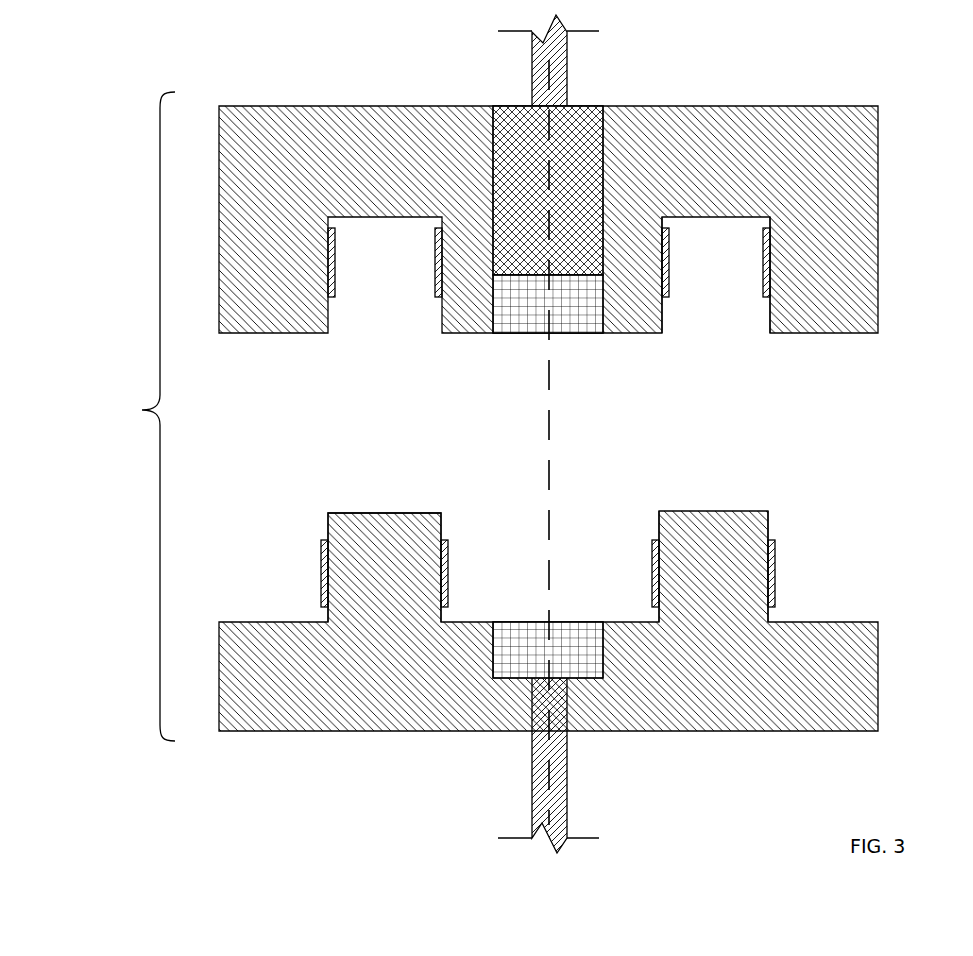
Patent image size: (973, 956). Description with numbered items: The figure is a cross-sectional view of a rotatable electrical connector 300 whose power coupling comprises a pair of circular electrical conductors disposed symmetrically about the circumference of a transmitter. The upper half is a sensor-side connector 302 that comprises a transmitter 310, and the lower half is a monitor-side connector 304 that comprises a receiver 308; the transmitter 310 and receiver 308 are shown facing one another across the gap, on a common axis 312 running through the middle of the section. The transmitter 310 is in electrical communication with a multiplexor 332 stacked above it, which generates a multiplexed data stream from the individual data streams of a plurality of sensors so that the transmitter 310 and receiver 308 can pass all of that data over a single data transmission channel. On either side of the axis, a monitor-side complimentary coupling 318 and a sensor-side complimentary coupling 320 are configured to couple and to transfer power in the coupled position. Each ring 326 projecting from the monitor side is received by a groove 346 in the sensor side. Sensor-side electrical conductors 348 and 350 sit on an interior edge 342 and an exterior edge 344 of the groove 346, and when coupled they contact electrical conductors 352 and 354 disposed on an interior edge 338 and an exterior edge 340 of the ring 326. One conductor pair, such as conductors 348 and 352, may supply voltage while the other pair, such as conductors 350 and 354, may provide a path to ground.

The rotatable electrical connector 300 is at (130, 416).
The sensor-side connector 302 is at (548, 233).
The monitor-side connector 304 is at (548, 608).
The receiver 308 is at (540, 621).
The transmitter 310 is at (525, 334).
The rotation axis 312 is at (549, 450).
The monitor-side complimentary coupling 318 is at (345, 529).
The sensor-side complimentary coupling 320 is at (294, 356).
The ring 326 is at (381, 513).
The multiplexor 332 is at (507, 106).
The interior edge of ring 338 is at (659, 525).
The exterior edge of ring 340 is at (713, 539).
The interior edge of groove 342 is at (663, 316).
The exterior edge of groove 344 is at (769, 316).
The groove 346 is at (731, 320).
The sensor-side electrical conductor 348 is at (669, 257).
The sensor-side electrical conductor 350 is at (762, 256).
The electrical conductor 352 is at (652, 586).
The electrical conductor 354 is at (776, 586).